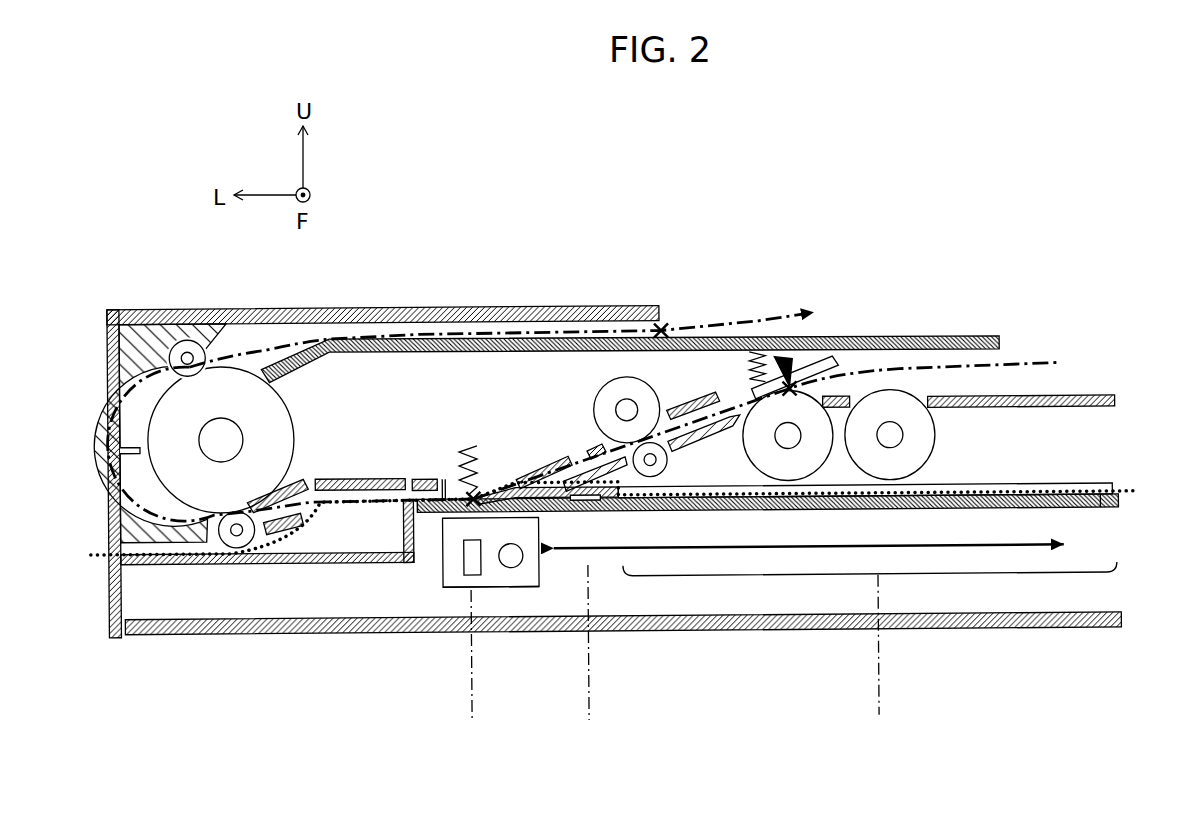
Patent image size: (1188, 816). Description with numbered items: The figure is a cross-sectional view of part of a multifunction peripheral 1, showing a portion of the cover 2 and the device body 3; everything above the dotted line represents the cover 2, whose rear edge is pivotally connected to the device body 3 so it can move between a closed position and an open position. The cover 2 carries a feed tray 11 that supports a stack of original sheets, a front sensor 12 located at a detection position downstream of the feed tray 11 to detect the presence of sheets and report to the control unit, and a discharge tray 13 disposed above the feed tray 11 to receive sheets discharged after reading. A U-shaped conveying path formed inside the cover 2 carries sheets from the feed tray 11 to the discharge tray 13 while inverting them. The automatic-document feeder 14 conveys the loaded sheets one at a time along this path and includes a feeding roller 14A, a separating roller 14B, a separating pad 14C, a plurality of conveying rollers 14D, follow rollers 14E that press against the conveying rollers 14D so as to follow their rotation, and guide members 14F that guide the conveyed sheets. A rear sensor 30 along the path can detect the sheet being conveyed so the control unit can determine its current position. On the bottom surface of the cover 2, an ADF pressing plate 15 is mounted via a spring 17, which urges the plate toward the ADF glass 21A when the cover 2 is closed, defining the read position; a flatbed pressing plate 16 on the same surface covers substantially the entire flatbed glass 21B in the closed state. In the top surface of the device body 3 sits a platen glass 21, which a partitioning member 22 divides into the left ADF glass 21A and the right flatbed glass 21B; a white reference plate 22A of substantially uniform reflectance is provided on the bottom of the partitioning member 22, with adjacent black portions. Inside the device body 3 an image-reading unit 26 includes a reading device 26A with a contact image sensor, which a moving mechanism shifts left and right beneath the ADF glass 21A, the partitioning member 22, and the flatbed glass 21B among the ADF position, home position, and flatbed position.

The multifunction peripheral 1 is at (557, 198).
The cover 2 is at (98, 478).
The device body 3 is at (100, 598).
The feed tray 11 is at (1082, 396).
The front sensor 12 is at (788, 357).
The discharge tray 13 is at (905, 336).
The automatic-document feeder (ADF) 14 is at (128, 380).
The feeding roller 14A is at (920, 440).
The separating roller 14B is at (757, 467).
The separating pad 14C is at (834, 360).
The conveying rollers 14D is at (170, 422).
The follow rollers 14E is at (190, 348).
The guide members 14F is at (343, 477).
The ADF pressing plate 15 is at (500, 488).
The flatbed pressing plate 16 is at (1042, 486).
The spring 17 is at (462, 454).
The platen glass 21 is at (932, 513).
The ADF glass 21A is at (425, 516).
The flatbed glass 21B is at (1100, 512).
The partitioning member 22 is at (553, 514).
The white reference plate 22A is at (584, 501).
The image-reading unit 26 is at (413, 618).
The reading device 26A is at (455, 578).
The rear sensor 30 is at (553, 446).